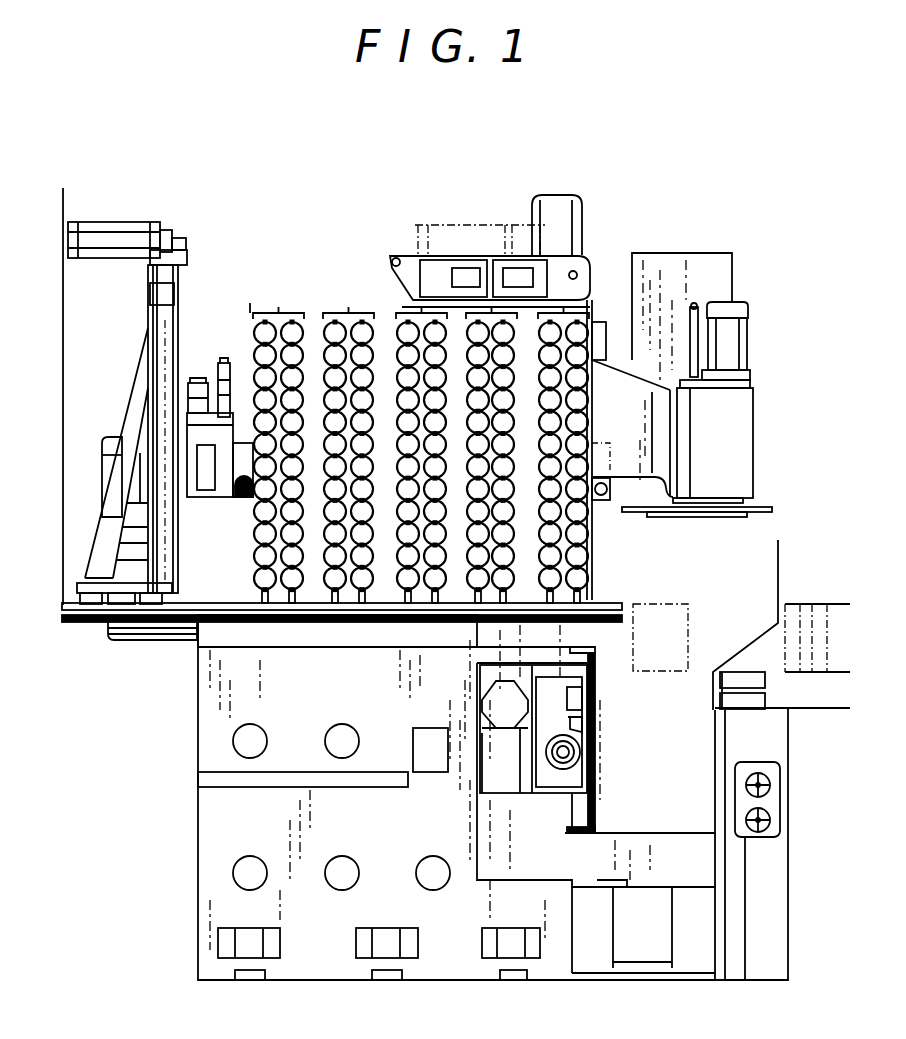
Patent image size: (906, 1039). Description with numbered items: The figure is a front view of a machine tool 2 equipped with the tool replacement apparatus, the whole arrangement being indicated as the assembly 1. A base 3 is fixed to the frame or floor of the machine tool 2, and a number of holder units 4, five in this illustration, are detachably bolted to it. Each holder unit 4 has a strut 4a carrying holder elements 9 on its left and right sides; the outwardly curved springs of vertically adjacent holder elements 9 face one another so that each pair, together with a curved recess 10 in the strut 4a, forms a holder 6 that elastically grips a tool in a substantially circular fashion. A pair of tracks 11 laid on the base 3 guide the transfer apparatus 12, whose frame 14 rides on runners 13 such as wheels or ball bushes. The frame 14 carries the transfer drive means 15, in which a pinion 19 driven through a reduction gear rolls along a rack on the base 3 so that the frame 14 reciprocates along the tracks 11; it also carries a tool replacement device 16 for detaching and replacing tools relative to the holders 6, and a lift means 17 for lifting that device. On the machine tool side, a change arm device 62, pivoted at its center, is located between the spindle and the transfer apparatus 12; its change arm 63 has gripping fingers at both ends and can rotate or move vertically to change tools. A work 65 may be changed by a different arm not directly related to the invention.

The roller mechanism assembly 1 is at (343, 258).
The machine tool 2 is at (197, 746).
The base 3 is at (172, 642).
The holder unit 4 is at (280, 313).
The strut 4a is at (572, 420).
The holder 6 is at (262, 360).
The holder element 9 is at (300, 312).
The curved recess 10 is at (553, 530).
The track 11 is at (213, 607).
The transfer apparatus 12 is at (130, 393).
The runner 13 is at (82, 605).
The frame 14 is at (162, 357).
The transfer drive means 15 is at (103, 465).
The tool replacement device 16 is at (220, 488).
The lift means 17 is at (176, 238).
The pinion 19 is at (115, 605).
The change arm device 62 is at (745, 362).
The change arm 63 is at (682, 518).
The work 65 is at (688, 614).